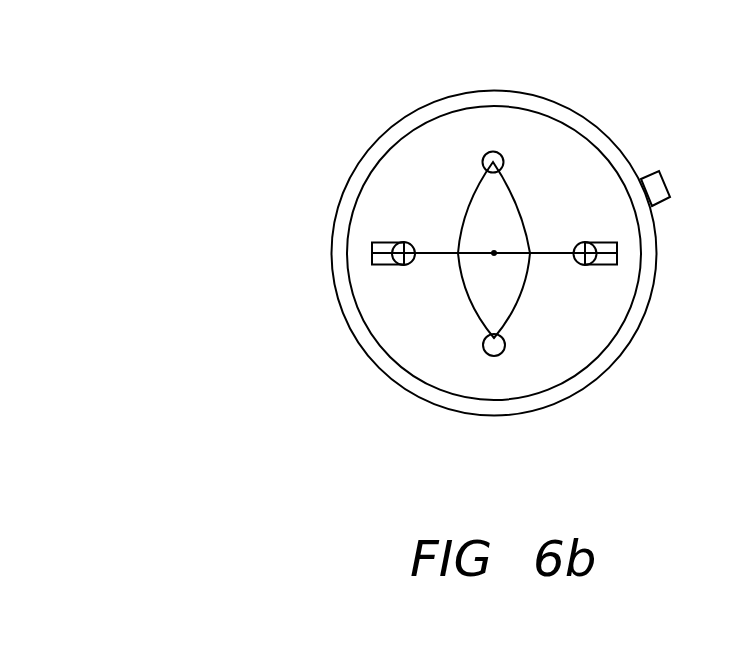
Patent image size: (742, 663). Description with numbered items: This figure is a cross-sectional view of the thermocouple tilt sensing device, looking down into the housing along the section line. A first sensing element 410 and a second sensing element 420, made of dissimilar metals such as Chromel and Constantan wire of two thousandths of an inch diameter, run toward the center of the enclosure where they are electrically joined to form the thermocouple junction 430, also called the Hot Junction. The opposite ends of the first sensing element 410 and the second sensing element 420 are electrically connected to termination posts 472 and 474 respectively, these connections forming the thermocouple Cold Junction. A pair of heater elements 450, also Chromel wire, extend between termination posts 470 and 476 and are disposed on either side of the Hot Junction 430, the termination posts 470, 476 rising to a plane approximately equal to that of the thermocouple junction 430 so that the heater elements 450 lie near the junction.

The first sensing element 410 is at (437, 251).
The second sensing element 420 is at (552, 252).
The thermocouple junction 430 is at (494, 253).
The heater element 450 is at (477, 316).
The termination post 470 is at (488, 152).
The termination post 472 is at (372, 251).
The termination post 474 is at (617, 255).
The termination post 476 is at (494, 356).